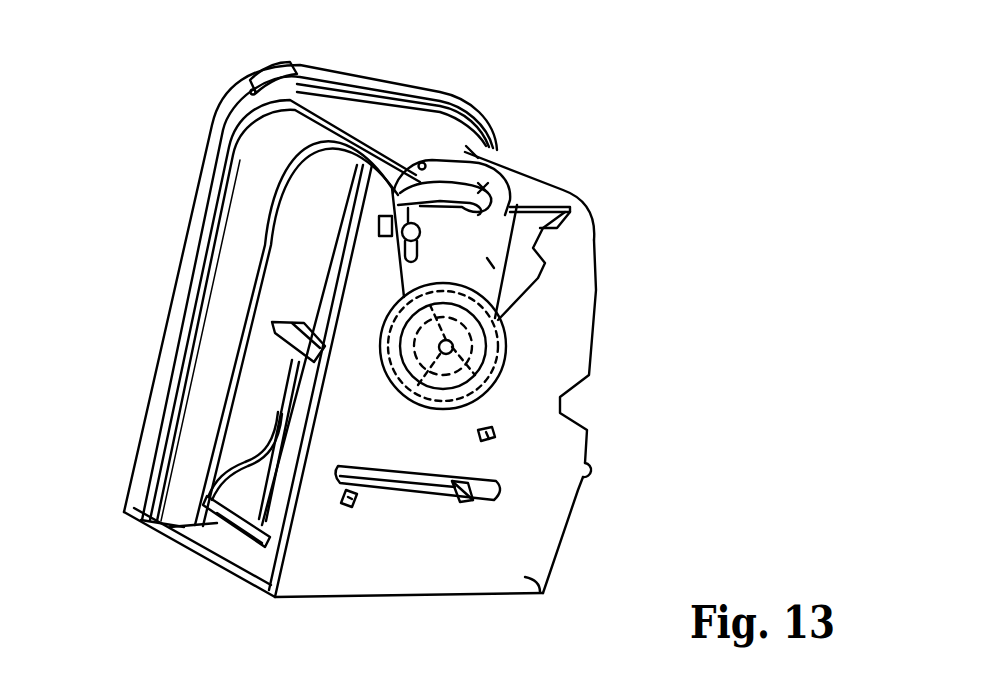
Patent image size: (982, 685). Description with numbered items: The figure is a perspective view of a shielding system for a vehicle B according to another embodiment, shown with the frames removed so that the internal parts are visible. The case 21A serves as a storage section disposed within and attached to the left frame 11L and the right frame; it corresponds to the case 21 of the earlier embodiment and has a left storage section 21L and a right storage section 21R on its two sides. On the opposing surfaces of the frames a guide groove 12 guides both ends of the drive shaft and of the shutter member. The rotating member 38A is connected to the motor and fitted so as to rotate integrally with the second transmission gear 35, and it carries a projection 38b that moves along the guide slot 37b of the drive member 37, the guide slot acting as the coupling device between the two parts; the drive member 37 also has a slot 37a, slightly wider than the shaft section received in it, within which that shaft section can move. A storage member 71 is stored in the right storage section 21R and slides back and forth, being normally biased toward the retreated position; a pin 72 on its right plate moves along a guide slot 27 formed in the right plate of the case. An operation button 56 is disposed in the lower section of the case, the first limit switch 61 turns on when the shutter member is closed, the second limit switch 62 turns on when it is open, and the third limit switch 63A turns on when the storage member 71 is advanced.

The guide groove 12 is at (256, 92).
The left frame 11L is at (208, 180).
The case 21A is at (470, 152).
The guide slot 37b is at (485, 187).
The projection 38b is at (378, 222).
The rotating member 38A is at (542, 228).
The first limit switch 61 is at (400, 243).
The drive member 37 is at (490, 260).
The left storage section 21L is at (230, 305).
The second transmission gear 35 is at (497, 356).
The right storage section 21R is at (262, 380).
The slot 37a is at (418, 370).
The second limit switch 62 is at (495, 440).
The vehicle B is at (575, 518).
The third limit switch 63A is at (348, 506).
The operation button 56 is at (233, 524).
The storage member 71 is at (246, 486).
The guide slot 27 is at (397, 482).
The pin 72 is at (475, 502).
The case 21 is at (543, 590).